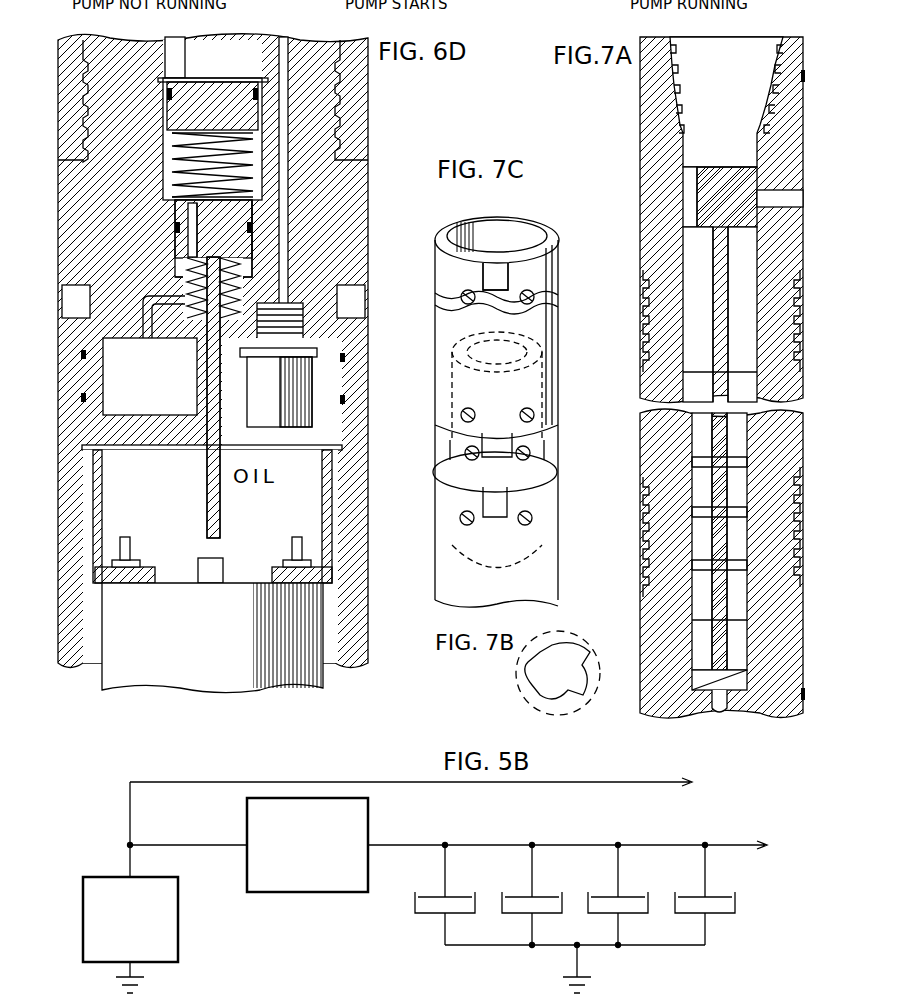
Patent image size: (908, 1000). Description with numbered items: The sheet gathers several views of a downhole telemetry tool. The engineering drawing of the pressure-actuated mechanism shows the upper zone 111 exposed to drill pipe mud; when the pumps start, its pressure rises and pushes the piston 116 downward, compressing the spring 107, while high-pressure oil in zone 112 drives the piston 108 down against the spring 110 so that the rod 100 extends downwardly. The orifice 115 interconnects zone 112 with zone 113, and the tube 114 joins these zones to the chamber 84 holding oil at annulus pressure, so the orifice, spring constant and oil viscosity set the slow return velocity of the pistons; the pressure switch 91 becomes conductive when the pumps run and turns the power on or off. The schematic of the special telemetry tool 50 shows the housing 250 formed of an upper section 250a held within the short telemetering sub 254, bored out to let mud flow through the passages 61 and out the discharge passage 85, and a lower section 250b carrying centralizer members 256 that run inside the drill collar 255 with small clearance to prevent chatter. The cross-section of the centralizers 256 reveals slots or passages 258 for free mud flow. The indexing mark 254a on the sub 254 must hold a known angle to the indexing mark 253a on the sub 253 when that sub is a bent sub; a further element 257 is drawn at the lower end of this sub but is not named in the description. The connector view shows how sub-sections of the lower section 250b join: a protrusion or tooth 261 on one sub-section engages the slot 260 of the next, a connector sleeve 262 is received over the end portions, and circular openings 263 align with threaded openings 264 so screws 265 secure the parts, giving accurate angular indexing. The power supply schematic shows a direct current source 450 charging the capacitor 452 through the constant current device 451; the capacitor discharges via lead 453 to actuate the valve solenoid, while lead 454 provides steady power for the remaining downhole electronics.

In FIG. 6D, the zone 111 is at (227, 72).
In FIG. 6D, the piston 116 is at (253, 110).
In FIG. 6D, the spring 107 is at (257, 157).
In FIG. 6D, the zone 112 is at (253, 188).
In FIG. 6D, the piston 108 is at (313, 230).
In FIG. 6D, the spring 110 is at (243, 245).
In FIG. 6D, the orifice 115 is at (185, 240).
In FIG. 6D, the zone 113 is at (175, 275).
In FIG. 6D, the tube 114 is at (165, 335).
In FIG. 6D, the chamber 84 is at (90, 430).
In FIG. 6D, the pressure switch 91 is at (300, 392).
In FIG. 6D, the rod 100 is at (207, 510).
In FIG. 7C, the slot 260 is at (486, 268).
In FIG. 7C, the circular openings 263 is at (475, 304).
In FIG. 7C, the screws 265 is at (497, 416).
In FIG. 7C, the threaded openings 264 is at (497, 456).
In FIG. 7C, the protrusion or tooth 261 is at (488, 440).
In FIG. 7A, the protrusion or tooth 261 is at (718, 250).
In FIG. 7C, the connector sleeve 262 is at (458, 458).
In FIG. 7B, the centralizer members 256 is at (520, 676).
In FIG. 7A, the centralizer members 256 is at (770, 508).
In FIG. 7B, the slots or passages 258 is at (536, 702).
In FIG. 7A, the telemetering sub 254 is at (640, 185).
In FIG. 7A, the indexing mark 254a is at (805, 77).
In FIG. 7A, the upper section 250a is at (740, 182).
In FIG. 7A, the discharge passage 85 is at (782, 200).
In FIG. 7A, the housing 250 is at (745, 287).
In FIG. 7A, the passages 61 is at (688, 210).
In FIG. 7A, the special telemetry tool 50 is at (633, 324).
In FIG. 7A, the drill collar 255 is at (640, 463).
In FIG. 7A, the lower section 250b is at (735, 465).
In FIG. 7A, the sub 253 is at (785, 673).
In FIG. 7A, the indexing mark 253a is at (805, 695).
In FIG. 7A, the pin 257 is at (730, 692).
In FIG. 5B, the source of direct current electric potential 450 is at (150, 935).
In FIG. 5B, the constant current device 451 is at (325, 893).
In FIG. 5B, the capacitor 452 is at (441, 949).
In FIG. 5B, the lead 453 is at (740, 838).
In FIG. 5B, the lead 454 is at (432, 782).